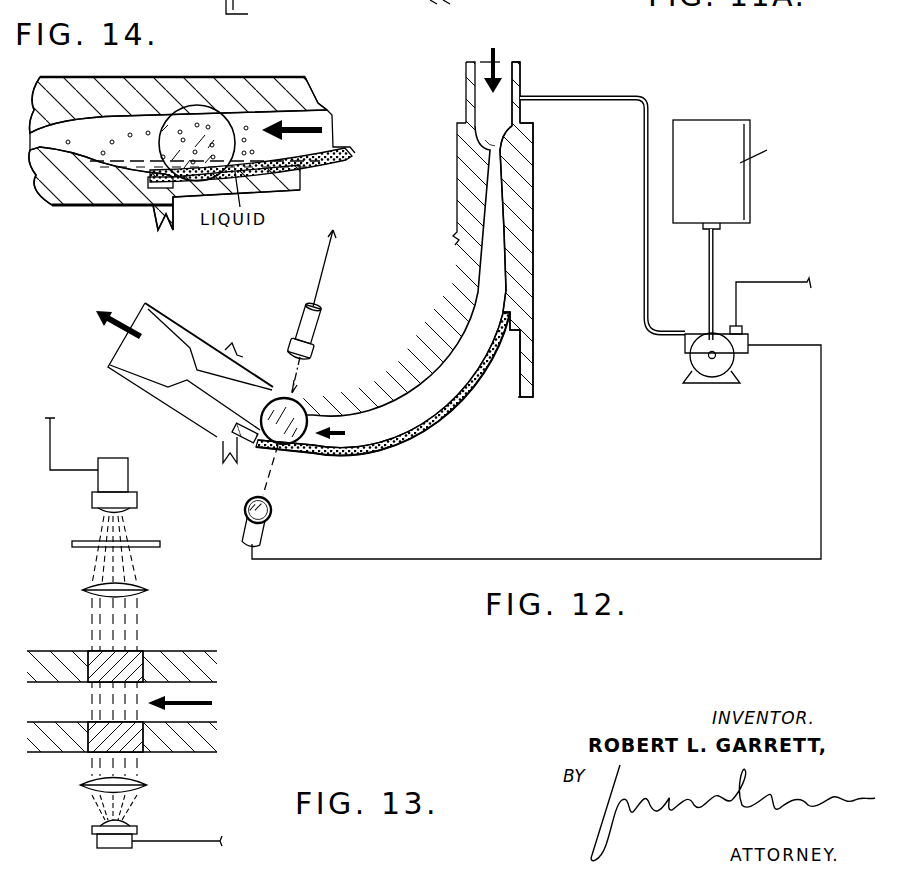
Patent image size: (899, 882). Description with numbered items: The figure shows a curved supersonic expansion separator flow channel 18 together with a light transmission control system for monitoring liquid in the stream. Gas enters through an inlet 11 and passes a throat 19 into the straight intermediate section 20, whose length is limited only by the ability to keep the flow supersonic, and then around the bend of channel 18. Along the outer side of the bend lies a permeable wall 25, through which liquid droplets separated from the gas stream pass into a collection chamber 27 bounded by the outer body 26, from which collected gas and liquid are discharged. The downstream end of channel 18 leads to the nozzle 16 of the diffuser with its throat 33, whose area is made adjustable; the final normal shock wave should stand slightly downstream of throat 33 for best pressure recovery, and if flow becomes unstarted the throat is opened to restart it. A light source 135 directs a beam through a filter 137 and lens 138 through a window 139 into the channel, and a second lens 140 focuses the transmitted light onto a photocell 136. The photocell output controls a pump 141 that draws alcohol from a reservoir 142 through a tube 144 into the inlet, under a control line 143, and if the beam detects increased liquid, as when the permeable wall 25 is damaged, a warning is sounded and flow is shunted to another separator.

In FIG. 12, the inlet tube 11 is at (507, 73).
In FIG. 12, the nozzle 16 is at (158, 357).
In FIG. 14, the channel 18 is at (318, 117).
In FIG. 12, the channel 18 is at (380, 428).
In FIG. 13, the channel 18 is at (213, 708).
In FIG. 12, the throat 19 is at (489, 148).
In FIG. 12, the straight intermediate section 20 is at (490, 206).
In FIG. 14, the permeable wall 25 is at (337, 167).
In FIG. 12, the permeable wall 25 is at (428, 438).
In FIG. 12, the outer wall body 26 is at (427, 386).
In FIG. 12, the collection chamber 27 is at (505, 371).
In FIG. 12, the throat 33 is at (200, 380).
In FIG. 12, the light source 135 is at (316, 336).
In FIG. 13, the light source 135 is at (120, 477).
In FIG. 12, the photocell 136 is at (275, 531).
In FIG. 13, the photocell 136 is at (105, 833).
In FIG. 13, the filter 137 is at (75, 541).
In FIG. 13, the lens 138 is at (84, 589).
In FIG. 14, the window 139 is at (200, 122).
In FIG. 12, the window 139 is at (298, 413).
In FIG. 13, the window 139 is at (138, 652).
In FIG. 13, the lens 140 is at (135, 785).
In FIG. 12, the pump 141 is at (698, 347).
In FIG. 12, the alcohol reservoir 142 is at (722, 185).
In FIG. 12, the control line 143 is at (773, 283).
In FIG. 12, the tube 144 is at (644, 230).